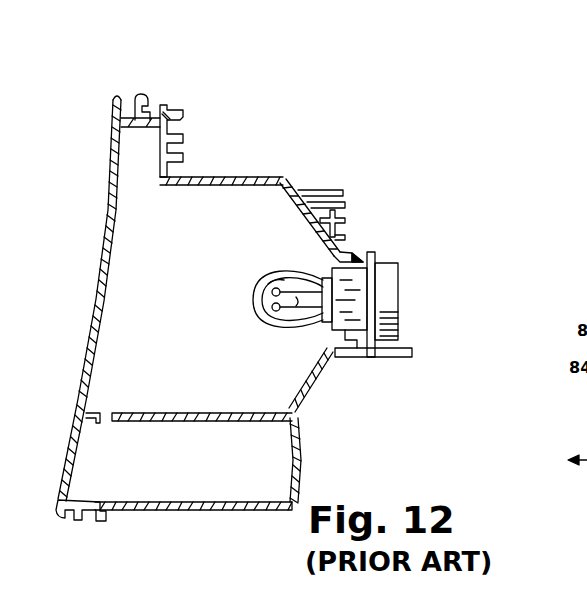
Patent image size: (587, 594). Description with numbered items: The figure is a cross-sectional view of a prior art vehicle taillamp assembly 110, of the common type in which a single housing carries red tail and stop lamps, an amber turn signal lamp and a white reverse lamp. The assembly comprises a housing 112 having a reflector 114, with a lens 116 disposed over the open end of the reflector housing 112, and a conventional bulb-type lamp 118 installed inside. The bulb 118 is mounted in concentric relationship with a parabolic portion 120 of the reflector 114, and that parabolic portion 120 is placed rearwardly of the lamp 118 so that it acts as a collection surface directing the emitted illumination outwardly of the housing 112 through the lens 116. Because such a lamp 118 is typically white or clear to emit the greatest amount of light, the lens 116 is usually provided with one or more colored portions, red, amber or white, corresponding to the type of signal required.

The vehicle taillamp assembly 110 is at (382, 135).
The housing 112 is at (228, 145).
The reflector 114 is at (233, 178).
The lens 116 is at (112, 158).
The bulb-type lamp 118 is at (296, 316).
The parabolic portion 120 is at (322, 237).